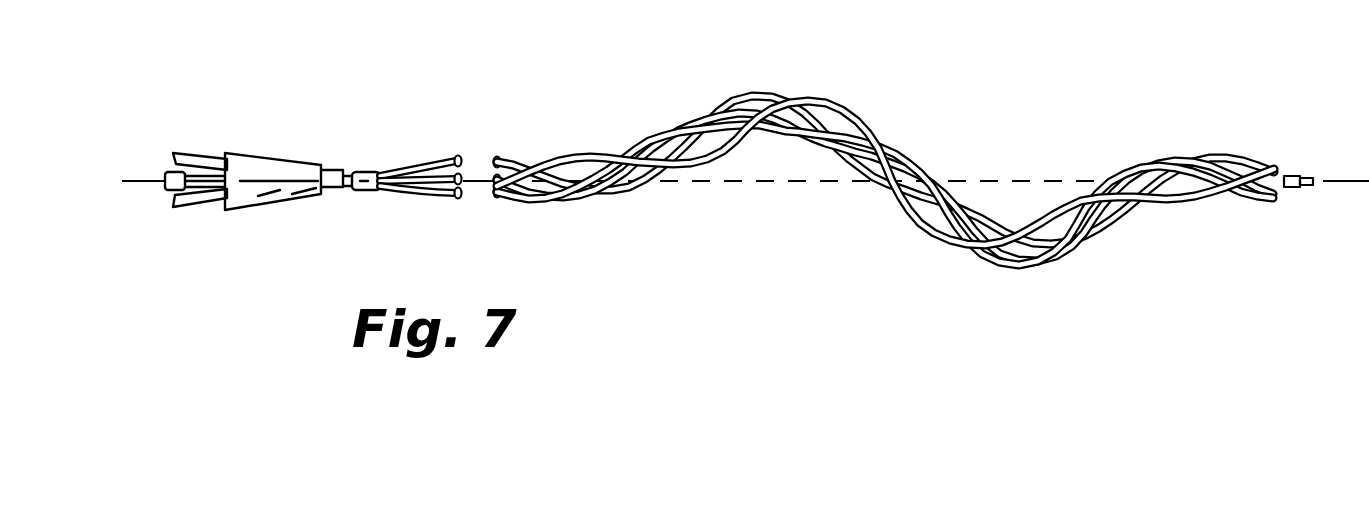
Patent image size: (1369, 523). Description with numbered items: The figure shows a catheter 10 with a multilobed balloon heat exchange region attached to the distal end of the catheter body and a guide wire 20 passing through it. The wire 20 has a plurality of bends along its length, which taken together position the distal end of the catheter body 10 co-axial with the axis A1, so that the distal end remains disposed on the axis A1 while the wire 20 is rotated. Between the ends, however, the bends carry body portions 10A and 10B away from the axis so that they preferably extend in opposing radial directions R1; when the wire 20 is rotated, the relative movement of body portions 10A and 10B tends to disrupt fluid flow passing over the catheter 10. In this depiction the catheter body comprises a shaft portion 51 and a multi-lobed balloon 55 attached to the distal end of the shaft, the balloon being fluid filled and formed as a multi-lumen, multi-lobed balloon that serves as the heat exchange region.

The catheter body 10 is at (716, 220).
The body portion 10A is at (1092, 282).
The body portion 10B is at (838, 71).
The wire 20 is at (485, 180).
The shaft portion 51 is at (362, 118).
The multi-lobed balloon 55 is at (970, 146).
The axis A1 is at (1005, 180).
The radial direction R1 is at (98, 132).